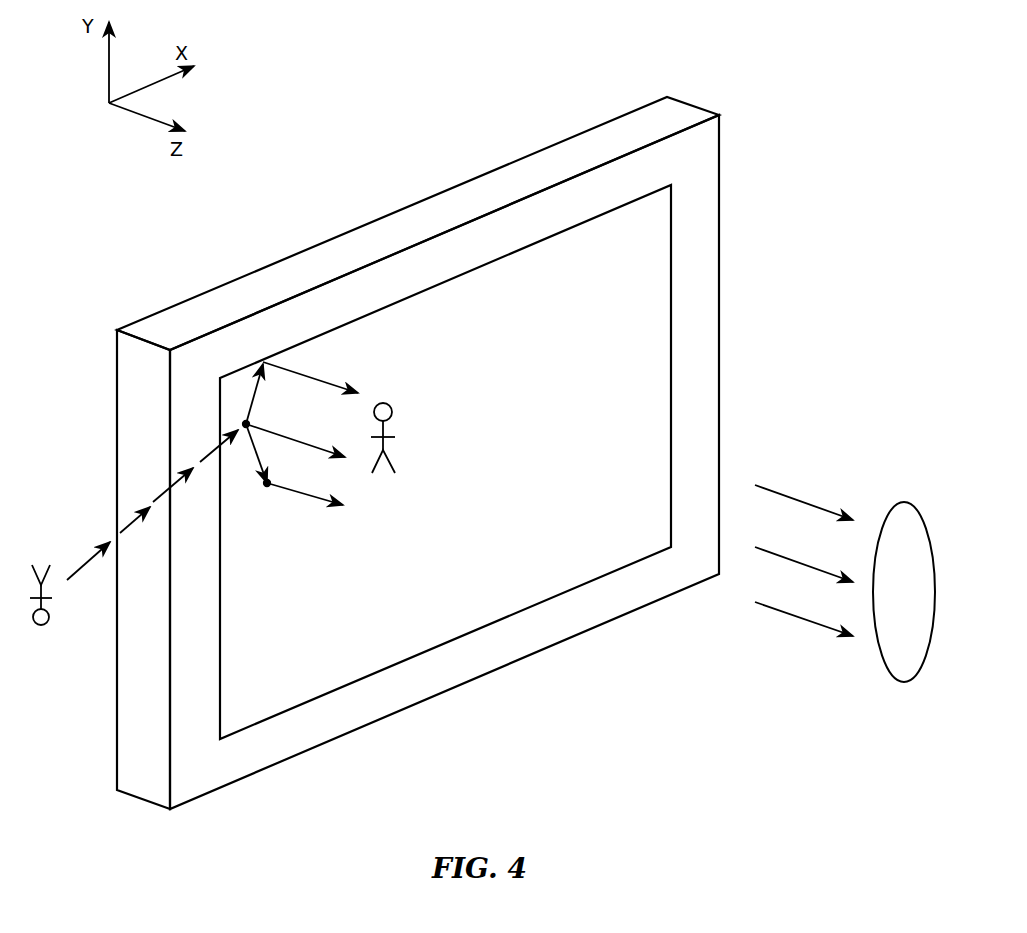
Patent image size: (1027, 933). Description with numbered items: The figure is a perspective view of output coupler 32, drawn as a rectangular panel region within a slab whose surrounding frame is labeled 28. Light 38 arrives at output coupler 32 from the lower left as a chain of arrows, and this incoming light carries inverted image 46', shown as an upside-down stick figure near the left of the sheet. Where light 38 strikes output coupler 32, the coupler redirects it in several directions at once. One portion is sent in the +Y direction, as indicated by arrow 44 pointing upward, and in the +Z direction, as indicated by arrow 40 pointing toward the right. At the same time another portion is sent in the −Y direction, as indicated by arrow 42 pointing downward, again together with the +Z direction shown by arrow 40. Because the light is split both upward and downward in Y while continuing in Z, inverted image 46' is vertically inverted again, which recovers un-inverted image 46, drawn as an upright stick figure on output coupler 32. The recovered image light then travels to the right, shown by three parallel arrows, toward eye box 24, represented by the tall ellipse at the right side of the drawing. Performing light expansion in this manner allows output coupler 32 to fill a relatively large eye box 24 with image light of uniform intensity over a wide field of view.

The display housing 28 is at (688, 103).
The output coupler 32 is at (647, 277).
The light 38 is at (208, 452).
The arrow 40 is at (326, 380).
The arrow 42 is at (252, 456).
The arrow 44 is at (252, 395).
The un-inverted image 46 is at (415, 438).
The inverted image 46' is at (41, 565).
The eye box 24 is at (904, 683).